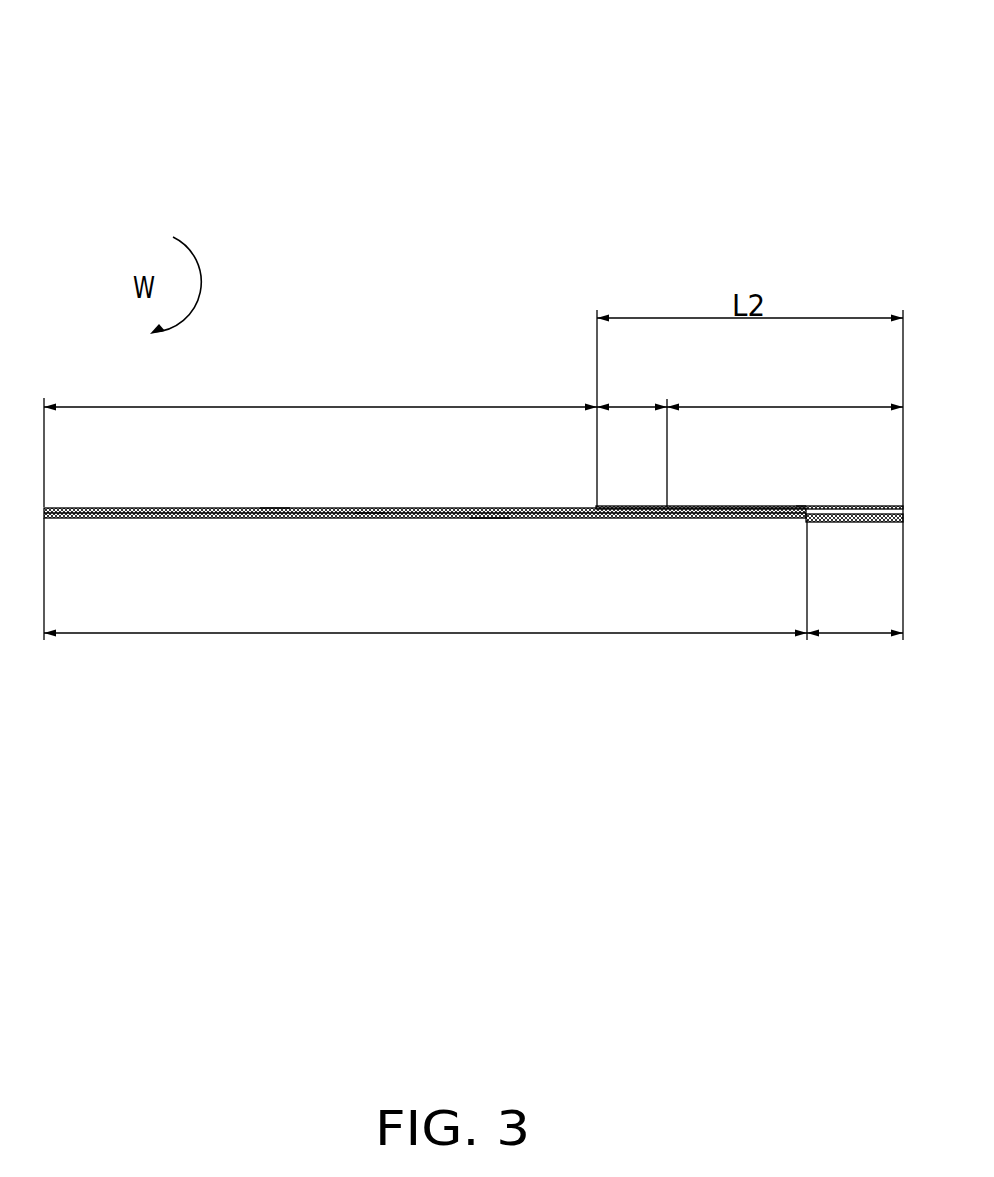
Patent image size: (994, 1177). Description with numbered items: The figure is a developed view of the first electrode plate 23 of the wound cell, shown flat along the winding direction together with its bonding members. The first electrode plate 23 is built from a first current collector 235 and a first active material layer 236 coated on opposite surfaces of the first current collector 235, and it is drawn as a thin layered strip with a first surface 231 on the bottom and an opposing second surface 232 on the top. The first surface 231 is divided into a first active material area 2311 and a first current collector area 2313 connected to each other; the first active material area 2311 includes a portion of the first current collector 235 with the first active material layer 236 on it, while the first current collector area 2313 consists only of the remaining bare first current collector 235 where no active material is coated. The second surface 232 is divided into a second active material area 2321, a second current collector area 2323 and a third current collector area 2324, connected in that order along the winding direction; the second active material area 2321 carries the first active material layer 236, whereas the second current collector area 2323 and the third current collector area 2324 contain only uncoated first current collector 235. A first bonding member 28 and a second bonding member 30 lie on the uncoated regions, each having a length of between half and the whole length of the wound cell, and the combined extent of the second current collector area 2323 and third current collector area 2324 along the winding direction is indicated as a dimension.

The first electrode plate 23 is at (487, 52).
The second surface 232 is at (217, 502).
The first surface 231 is at (485, 522).
The first current collector 235 is at (274, 517).
The first active material layer 236 is at (369, 516).
The first bonding member 28 is at (627, 506).
The second bonding member 30 is at (797, 506).
The second active material area 2321 is at (320, 408).
The second current collector area 2323 is at (634, 438).
The third current collector area 2324 is at (785, 475).
The first active material area 2311 is at (425, 591).
The first current collector area 2313 is at (855, 648).